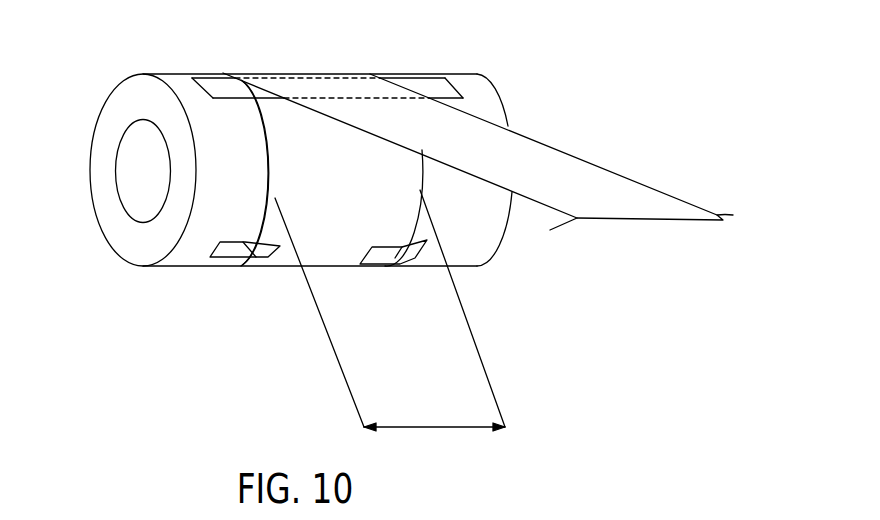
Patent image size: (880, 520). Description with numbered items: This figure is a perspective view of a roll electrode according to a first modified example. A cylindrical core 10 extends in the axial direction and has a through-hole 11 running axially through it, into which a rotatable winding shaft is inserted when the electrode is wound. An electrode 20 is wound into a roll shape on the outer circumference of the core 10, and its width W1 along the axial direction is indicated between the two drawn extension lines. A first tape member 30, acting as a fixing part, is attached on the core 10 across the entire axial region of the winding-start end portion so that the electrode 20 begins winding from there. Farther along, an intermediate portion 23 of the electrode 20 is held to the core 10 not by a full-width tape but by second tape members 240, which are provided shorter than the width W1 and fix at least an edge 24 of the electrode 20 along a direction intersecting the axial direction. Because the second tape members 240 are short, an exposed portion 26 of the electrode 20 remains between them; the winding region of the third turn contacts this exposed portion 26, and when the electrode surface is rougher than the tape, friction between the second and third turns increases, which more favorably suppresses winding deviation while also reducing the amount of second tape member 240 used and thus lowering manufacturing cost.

The core 10 is at (103, 151).
The through-hole 11 is at (120, 157).
The electrode 20 is at (547, 150).
The intermediate portion 23 is at (373, 267).
The edge 24 is at (274, 175).
The exposed portion 26 is at (343, 250).
The first tape member 30 is at (425, 82).
The second tape member 240 is at (250, 262).
The width of the electrode W1 is at (434, 407).